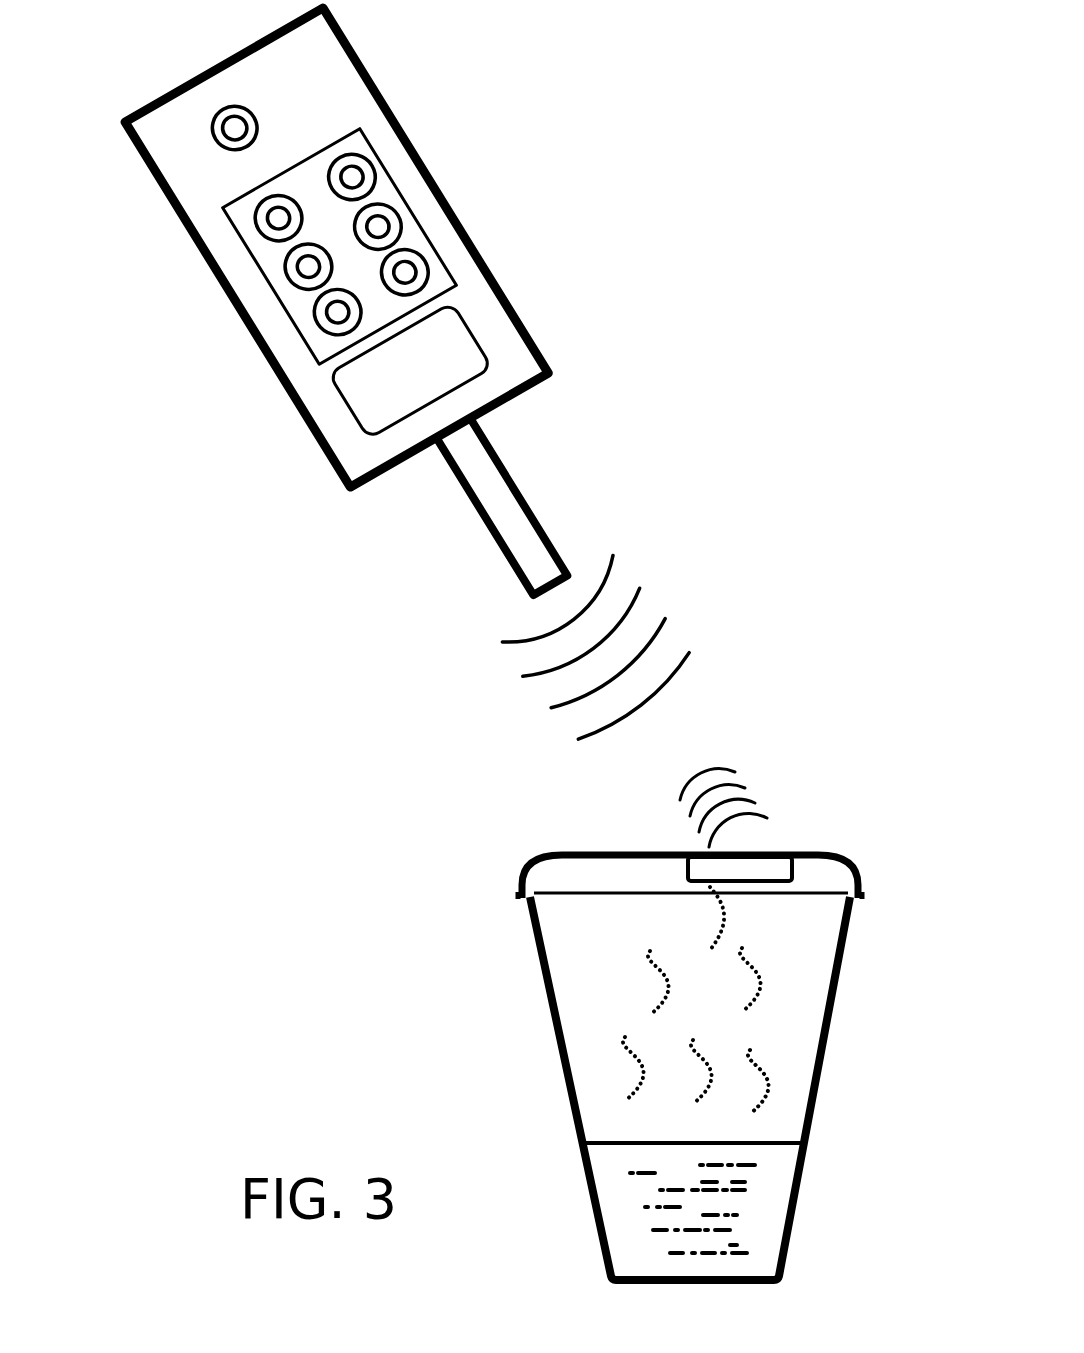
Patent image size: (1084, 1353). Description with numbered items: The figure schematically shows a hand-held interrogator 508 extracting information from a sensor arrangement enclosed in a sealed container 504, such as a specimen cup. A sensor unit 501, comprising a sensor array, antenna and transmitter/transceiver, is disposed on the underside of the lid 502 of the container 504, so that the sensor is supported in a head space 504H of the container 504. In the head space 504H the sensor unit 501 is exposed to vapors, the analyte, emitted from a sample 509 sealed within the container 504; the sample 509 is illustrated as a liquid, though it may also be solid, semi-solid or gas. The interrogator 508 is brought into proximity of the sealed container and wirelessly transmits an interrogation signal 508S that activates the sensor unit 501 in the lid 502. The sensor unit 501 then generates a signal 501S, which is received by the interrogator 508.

The interrogator 508 is at (232, 301).
The interrogation signal 508S is at (503, 673).
The signal 501S is at (755, 762).
The sensor unit 501 is at (775, 865).
The lid 502 is at (530, 867).
The container 504 is at (557, 1038).
The head space 504H is at (588, 950).
The sample 509 is at (772, 1187).